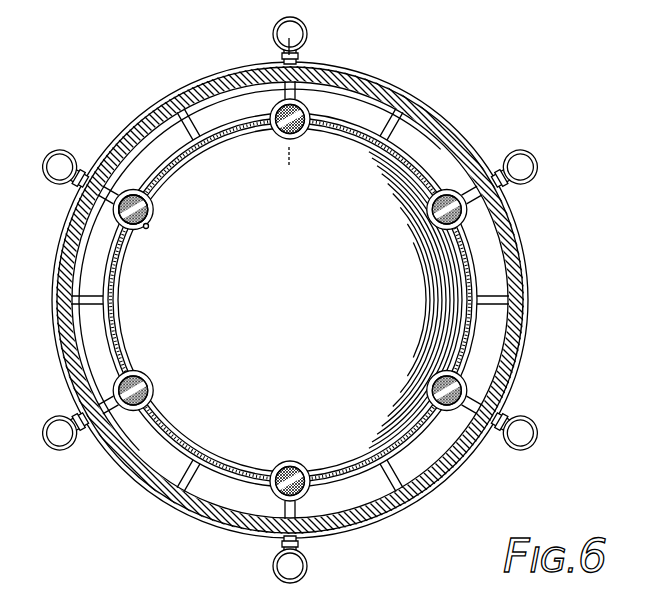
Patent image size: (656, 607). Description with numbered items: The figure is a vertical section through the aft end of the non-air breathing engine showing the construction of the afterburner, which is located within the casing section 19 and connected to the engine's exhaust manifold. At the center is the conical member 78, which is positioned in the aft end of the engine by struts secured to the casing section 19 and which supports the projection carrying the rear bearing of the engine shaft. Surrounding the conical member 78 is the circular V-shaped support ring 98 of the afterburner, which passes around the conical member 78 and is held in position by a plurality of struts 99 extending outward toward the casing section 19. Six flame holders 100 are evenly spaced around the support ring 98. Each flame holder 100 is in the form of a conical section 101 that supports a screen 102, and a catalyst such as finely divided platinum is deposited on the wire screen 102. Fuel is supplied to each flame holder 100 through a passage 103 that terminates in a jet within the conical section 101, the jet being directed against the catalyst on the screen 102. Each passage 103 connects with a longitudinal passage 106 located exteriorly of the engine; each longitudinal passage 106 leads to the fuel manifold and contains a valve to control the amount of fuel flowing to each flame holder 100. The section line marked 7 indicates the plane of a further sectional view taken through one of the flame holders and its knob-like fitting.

The section line 7- 7 is at (284, 47).
The casing section 19 is at (317, 333).
The conical member 78 is at (361, 300).
The circular V-shaped support ring 98 is at (168, 179).
The struts 99 is at (411, 127).
The flame holder 100 is at (165, 236).
The conical section 101 is at (147, 229).
The screen 102 is at (134, 228).
The passage 103 is at (90, 203).
The longitudinal passage 106 is at (512, 162).